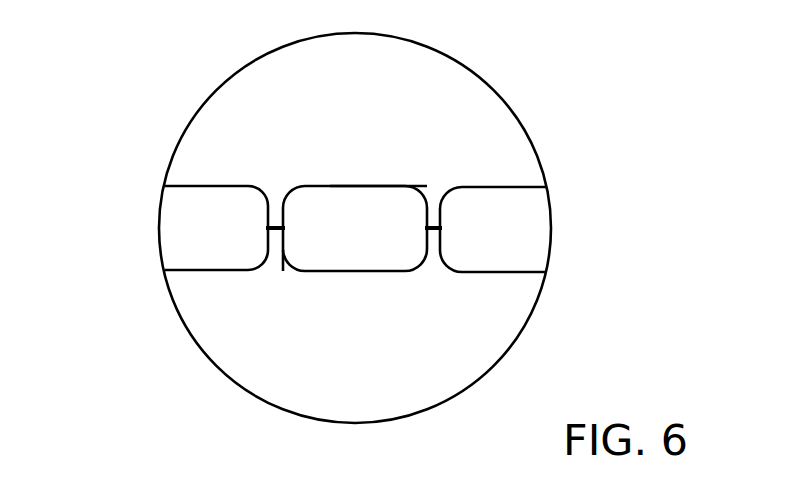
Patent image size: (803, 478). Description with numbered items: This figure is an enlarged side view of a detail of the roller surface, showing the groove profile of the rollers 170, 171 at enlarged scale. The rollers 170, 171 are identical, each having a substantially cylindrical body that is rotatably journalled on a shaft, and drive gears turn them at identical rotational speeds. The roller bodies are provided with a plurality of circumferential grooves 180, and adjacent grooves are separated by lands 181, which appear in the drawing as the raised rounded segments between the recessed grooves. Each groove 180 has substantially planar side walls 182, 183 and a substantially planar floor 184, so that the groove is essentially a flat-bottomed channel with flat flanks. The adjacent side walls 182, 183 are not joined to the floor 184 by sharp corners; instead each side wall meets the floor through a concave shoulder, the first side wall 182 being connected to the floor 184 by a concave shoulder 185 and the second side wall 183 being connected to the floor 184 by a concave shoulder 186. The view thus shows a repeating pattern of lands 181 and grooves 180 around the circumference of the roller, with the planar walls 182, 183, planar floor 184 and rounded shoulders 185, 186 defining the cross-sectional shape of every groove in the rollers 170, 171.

The roller 170 is at (524, 162).
The roller 171 is at (494, 319).
The circumferential groove 180 is at (520, 240).
The land 181 is at (439, 208).
The side wall 182 is at (320, 186).
The side wall 183 is at (390, 186).
The floor 184 is at (353, 186).
The concave shoulder 185 is at (289, 272).
The concave shoulder 186 is at (260, 260).